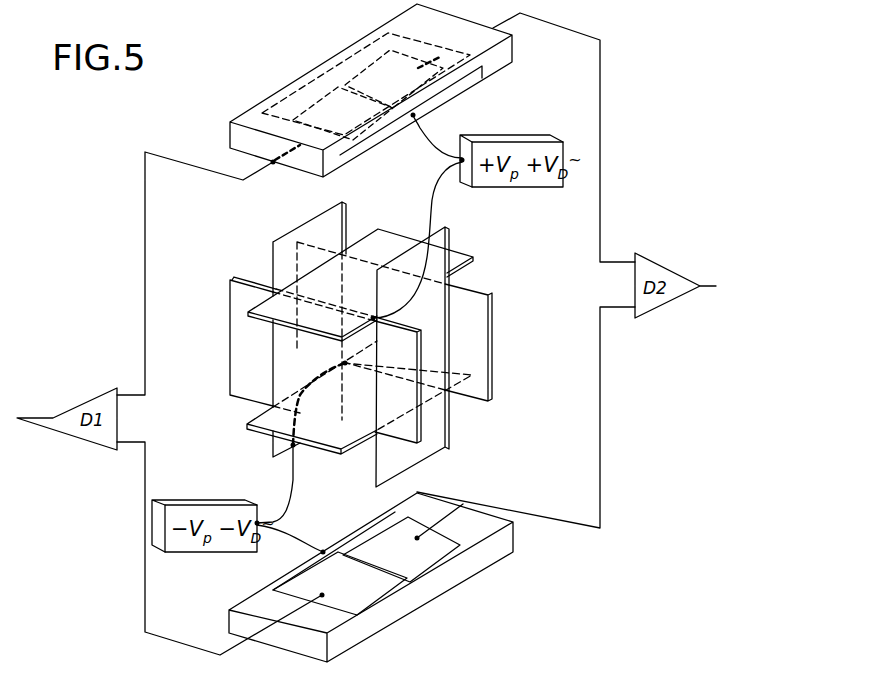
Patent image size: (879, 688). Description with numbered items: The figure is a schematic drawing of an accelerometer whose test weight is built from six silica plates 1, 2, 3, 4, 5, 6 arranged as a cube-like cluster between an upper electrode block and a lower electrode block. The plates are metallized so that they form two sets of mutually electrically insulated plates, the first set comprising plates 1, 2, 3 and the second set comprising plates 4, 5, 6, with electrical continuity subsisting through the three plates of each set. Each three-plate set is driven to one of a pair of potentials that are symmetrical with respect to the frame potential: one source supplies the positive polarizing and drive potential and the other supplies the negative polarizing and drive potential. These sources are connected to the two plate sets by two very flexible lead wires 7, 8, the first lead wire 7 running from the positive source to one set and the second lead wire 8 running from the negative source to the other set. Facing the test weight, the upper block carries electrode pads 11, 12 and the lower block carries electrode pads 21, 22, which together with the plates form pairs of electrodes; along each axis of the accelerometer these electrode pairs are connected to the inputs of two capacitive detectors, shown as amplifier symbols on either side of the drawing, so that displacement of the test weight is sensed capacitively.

The silica plate 1 is at (470, 255).
The silica plate 2 is at (247, 425).
The silica plate 3 is at (230, 338).
The silica plate 4 is at (493, 327).
The silica plate 5 is at (445, 228).
The silica plate 6 is at (300, 226).
The flexible lead wire 7 is at (430, 188).
The flexible lead wire 8 is at (295, 485).
The upper detector electrode pad 11 is at (310, 117).
The upper detector electrode pad 12 is at (403, 85).
The lower detector electrode pad 21 is at (423, 555).
The lower detector electrode pad 22 is at (363, 595).